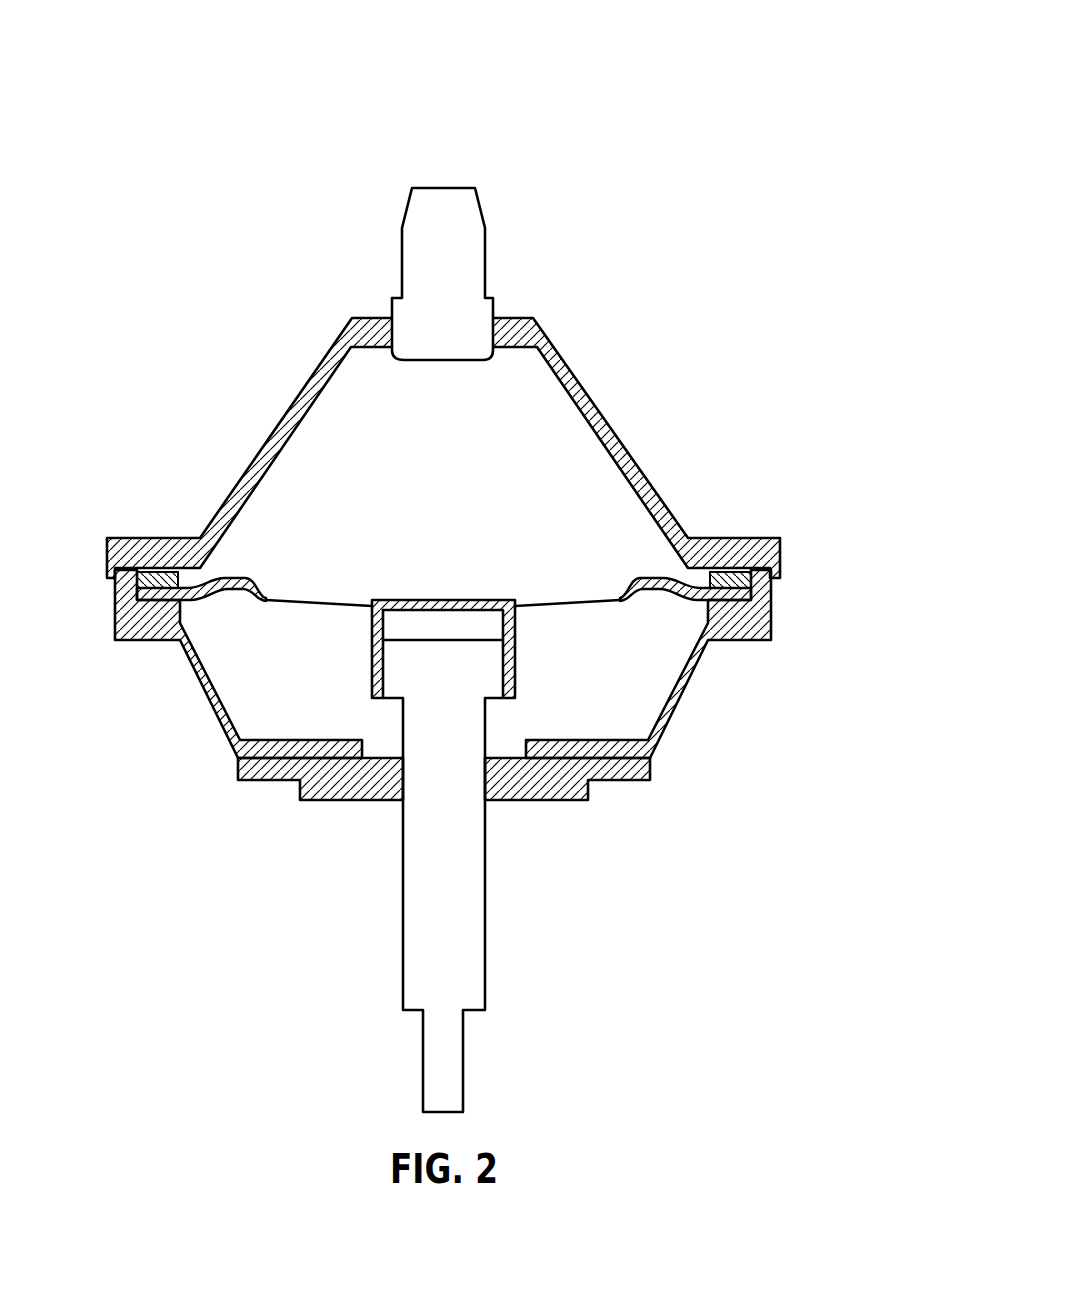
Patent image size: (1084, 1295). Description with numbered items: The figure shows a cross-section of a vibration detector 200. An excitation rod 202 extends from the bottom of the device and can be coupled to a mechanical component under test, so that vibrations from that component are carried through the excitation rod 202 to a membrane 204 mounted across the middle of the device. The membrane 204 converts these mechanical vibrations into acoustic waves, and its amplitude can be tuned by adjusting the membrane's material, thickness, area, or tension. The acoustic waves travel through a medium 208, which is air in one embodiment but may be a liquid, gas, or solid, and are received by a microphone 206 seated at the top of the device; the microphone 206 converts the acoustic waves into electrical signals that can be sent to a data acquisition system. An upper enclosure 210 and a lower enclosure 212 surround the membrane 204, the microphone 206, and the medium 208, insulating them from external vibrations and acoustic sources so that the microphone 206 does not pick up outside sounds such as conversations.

The vibration detector 200 is at (590, 40).
The excitation rod 202 is at (402, 912).
The membrane 204 is at (587, 600).
The microphone 206 is at (444, 188).
The medium 208 is at (543, 448).
The upper enclosure 210 is at (307, 385).
The lower enclosure 212 is at (672, 717).